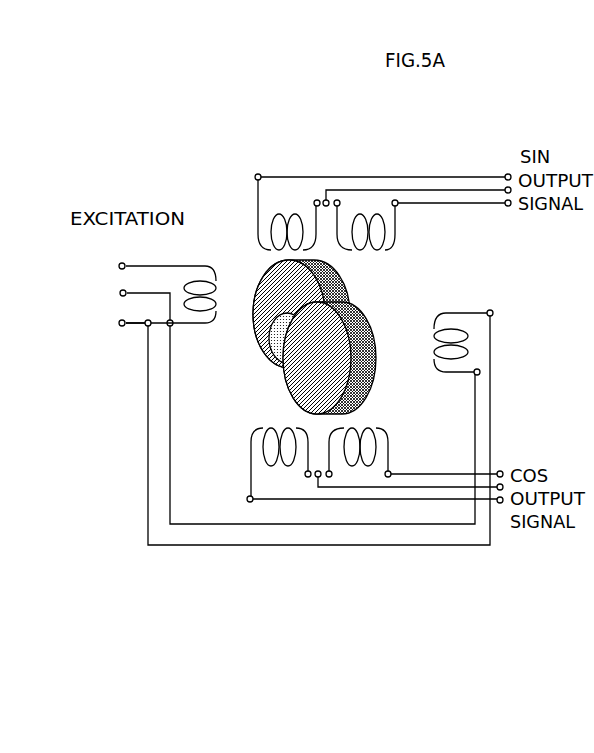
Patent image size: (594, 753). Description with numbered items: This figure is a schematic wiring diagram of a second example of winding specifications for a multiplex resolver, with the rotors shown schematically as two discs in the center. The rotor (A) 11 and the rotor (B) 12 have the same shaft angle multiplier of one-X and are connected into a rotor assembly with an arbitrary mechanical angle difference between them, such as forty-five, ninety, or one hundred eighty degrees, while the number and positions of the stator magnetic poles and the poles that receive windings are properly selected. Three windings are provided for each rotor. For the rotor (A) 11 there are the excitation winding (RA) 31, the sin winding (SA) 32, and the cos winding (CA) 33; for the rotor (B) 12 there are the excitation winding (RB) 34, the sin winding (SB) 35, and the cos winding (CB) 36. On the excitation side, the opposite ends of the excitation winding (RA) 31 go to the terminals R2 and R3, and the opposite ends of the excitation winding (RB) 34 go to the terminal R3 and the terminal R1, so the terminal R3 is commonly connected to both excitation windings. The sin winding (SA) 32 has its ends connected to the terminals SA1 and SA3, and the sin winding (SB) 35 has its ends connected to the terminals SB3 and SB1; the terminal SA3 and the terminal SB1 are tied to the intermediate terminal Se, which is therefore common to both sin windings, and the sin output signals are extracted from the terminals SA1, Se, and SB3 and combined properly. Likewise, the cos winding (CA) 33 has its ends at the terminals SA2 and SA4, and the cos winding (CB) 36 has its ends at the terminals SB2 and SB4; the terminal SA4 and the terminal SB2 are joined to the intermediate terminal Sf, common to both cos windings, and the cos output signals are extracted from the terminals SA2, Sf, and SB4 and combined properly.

The rotor (A) 11 is at (260, 343).
The rotor (B) 12 is at (375, 342).
The excitation winding (RA) 31 is at (199, 264).
The sin winding (SA) 32 is at (257, 230).
The cos winding (CA) 33 is at (250, 450).
The excitation winding (RB) 34 is at (445, 313).
The sin winding (SB) 35 is at (395, 222).
The cos winding (CB) 36 is at (430, 437).
The terminal SA1 is at (257, 175).
The terminal SA2 is at (249, 501).
The terminal SA3 is at (316, 202).
The terminal SA4 is at (309, 476).
The terminal SB1 is at (337, 202).
The terminal SB2 is at (329, 477).
The terminal SB3 is at (395, 202).
The terminal SB4 is at (388, 477).
The intermediate terminal Se is at (325, 202).
The intermediate terminal Sf is at (318, 477).
The terminal R1 is at (144, 322).
The terminal R2 is at (144, 266).
The terminal R3 is at (128, 305).